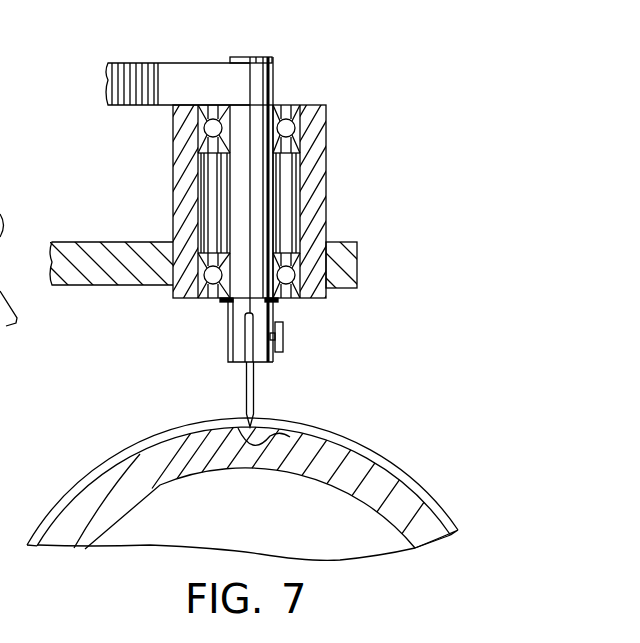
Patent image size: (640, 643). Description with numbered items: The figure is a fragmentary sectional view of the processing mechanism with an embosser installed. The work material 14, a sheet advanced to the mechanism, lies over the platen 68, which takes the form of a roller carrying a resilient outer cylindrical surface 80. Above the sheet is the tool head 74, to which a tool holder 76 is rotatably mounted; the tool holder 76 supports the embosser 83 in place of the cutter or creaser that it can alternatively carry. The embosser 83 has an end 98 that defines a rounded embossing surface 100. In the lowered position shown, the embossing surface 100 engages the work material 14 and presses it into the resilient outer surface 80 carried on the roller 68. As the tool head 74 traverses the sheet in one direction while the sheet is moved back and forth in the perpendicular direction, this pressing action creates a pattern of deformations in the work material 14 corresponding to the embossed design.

The tool head 74 is at (328, 168).
The tool holder 76 is at (228, 337).
The end 98 is at (243, 382).
The embosser 83 is at (256, 388).
The embossing surface 100 is at (290, 437).
The work material 14 is at (132, 447).
The platen 68 is at (82, 502).
The resilient outer cylindrical surface 80 is at (417, 480).